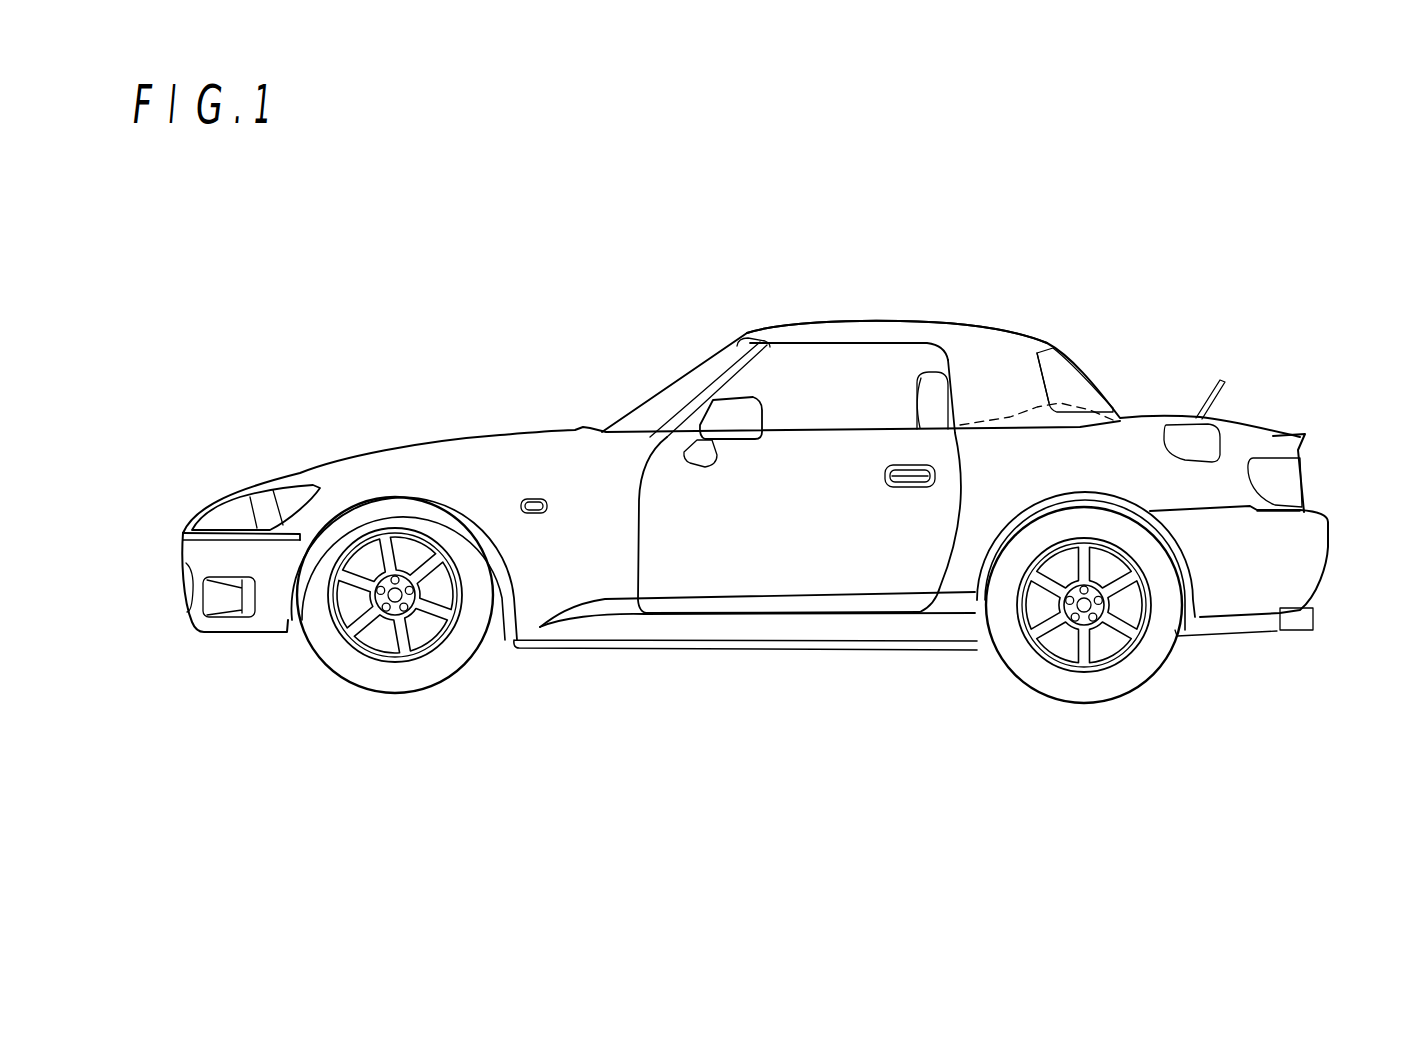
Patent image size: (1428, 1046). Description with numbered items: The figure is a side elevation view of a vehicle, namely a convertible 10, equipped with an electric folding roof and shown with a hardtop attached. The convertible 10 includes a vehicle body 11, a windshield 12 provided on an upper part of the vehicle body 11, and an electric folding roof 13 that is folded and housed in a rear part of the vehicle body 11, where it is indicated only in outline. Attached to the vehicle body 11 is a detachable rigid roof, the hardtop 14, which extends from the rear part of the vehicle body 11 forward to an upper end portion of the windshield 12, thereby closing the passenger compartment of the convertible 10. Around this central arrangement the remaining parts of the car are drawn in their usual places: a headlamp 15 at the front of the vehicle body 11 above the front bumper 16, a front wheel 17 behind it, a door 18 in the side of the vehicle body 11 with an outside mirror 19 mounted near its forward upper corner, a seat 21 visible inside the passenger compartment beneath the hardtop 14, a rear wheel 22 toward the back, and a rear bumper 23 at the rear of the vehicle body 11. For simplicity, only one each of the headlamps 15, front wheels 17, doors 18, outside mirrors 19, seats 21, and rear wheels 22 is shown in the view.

The convertible 10 is at (438, 284).
The vehicle body 11 is at (520, 432).
The windshield 12 is at (682, 376).
The electric folding roof 13 is at (1034, 392).
The hardtop 14 is at (855, 300).
The headlamp 15 is at (252, 510).
The front bumper 16 is at (183, 540).
The front wheel 17 is at (328, 660).
The door 18 is at (716, 574).
The outside mirror 19 is at (766, 409).
The seat 21 is at (916, 378).
The rear wheel 22 is at (1165, 660).
The rear bumper 23 is at (1330, 540).